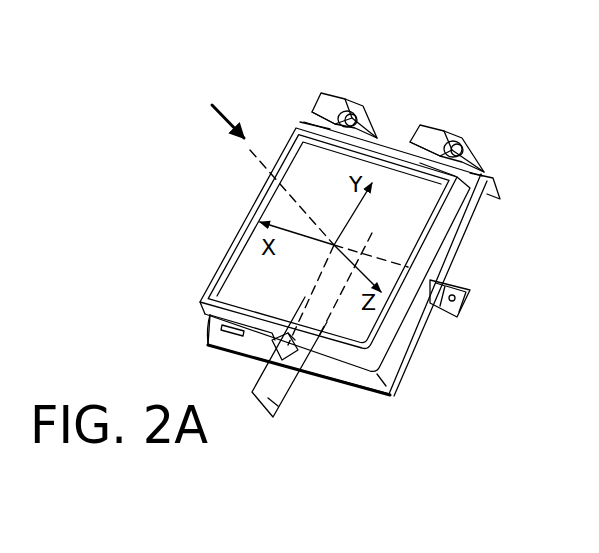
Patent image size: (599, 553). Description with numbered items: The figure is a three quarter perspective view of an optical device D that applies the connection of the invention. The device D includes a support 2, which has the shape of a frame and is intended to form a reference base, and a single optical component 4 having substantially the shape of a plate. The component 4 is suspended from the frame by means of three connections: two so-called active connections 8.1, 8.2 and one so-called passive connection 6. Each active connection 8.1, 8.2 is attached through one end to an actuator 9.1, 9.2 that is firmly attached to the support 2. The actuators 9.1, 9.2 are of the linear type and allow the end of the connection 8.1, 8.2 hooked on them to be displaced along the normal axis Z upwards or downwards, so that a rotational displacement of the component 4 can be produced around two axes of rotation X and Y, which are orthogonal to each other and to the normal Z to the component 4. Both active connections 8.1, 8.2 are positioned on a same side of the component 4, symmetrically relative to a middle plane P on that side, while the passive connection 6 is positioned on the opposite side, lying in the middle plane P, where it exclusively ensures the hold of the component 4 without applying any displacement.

The support 2 is at (355, 398).
The optical component 4 is at (440, 244).
The passive connection 6 is at (272, 342).
The active connection 8.1 is at (323, 150).
The active connection 8.2 is at (428, 180).
The actuator 9.1 is at (328, 103).
The actuator 9.2 is at (432, 136).
The middle plane P is at (277, 410).
The optical device D is at (186, 235).